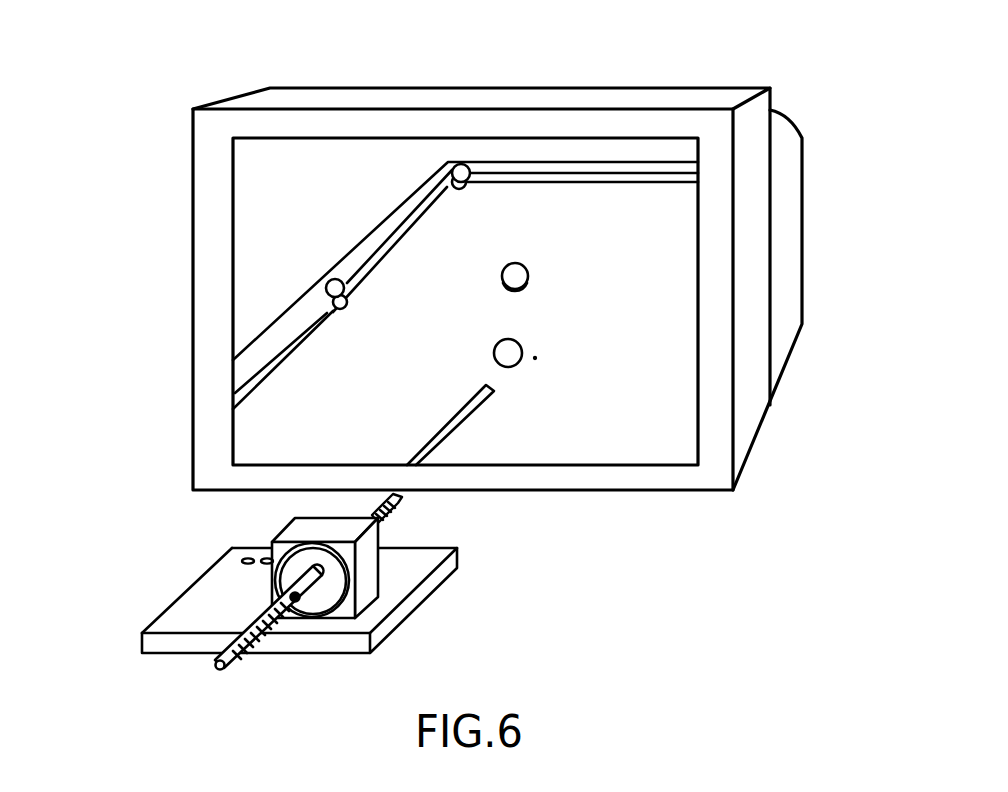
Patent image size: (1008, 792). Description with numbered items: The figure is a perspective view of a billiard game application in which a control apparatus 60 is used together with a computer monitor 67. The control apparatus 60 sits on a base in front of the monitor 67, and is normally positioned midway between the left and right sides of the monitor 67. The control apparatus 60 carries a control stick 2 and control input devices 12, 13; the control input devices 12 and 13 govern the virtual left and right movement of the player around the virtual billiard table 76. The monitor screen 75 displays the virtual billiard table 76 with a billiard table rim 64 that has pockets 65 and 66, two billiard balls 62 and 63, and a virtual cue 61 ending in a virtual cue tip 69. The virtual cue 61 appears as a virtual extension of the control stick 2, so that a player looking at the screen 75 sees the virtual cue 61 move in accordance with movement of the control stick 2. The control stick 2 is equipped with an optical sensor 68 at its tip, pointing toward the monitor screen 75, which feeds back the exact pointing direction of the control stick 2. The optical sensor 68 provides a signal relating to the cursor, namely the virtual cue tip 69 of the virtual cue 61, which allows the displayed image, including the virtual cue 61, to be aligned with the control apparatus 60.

The control stick 2 is at (243, 660).
The control input device 12 is at (242, 561).
The control input device 13 is at (265, 559).
The control apparatus 60 is at (163, 623).
The virtual cue 61 is at (488, 392).
The billiard ball 62 is at (513, 351).
The billiard ball 63 is at (514, 275).
The billiard table rim 64 is at (250, 372).
The pocket 65 is at (330, 287).
The pocket 66 is at (440, 176).
The computer monitor 67 is at (743, 218).
The optical sensor 68 is at (398, 495).
The virtual cue tip 69 is at (487, 389).
The monitor screen 75 is at (373, 410).
The virtual billiard table 76 is at (283, 447).